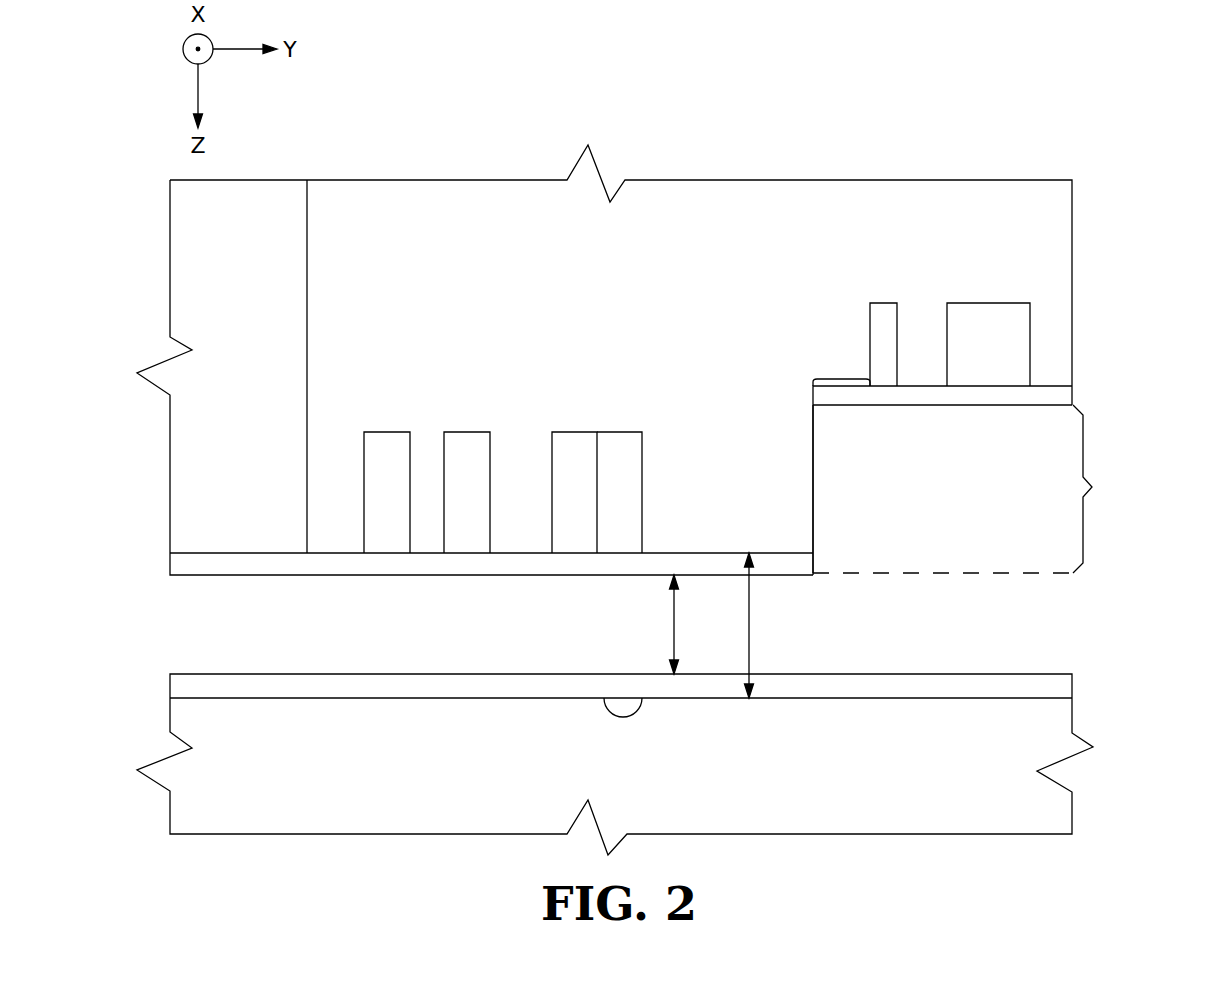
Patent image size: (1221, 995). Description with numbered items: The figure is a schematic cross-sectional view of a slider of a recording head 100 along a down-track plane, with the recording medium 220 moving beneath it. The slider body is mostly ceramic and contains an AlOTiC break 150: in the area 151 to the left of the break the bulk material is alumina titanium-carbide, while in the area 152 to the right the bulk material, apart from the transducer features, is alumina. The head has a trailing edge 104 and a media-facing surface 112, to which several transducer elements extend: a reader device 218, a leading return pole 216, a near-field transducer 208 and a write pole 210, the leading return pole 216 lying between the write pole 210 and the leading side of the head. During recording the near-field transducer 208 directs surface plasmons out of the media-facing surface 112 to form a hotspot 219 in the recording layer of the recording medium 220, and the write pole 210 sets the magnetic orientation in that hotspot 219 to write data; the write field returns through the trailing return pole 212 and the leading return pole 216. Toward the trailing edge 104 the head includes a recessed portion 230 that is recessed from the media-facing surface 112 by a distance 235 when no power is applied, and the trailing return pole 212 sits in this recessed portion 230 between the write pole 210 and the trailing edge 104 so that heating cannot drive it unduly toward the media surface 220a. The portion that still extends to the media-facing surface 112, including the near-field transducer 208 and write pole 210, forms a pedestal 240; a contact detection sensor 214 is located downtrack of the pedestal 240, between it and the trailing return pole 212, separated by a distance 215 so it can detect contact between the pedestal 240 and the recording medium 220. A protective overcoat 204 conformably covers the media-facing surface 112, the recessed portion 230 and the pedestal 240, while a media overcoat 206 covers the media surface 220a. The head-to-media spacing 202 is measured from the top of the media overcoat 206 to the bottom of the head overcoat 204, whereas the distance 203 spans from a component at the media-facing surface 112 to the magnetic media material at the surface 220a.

The recording head 100 is at (1114, 99).
The trailing edge 104 is at (640, 389).
The media-facing surface 112 is at (334, 567).
The AlOTiC break 150 is at (307, 337).
The area to the left of break 151 is at (221, 391).
The area to the right of break 152 is at (358, 257).
The head-to-media spacing 202 is at (674, 627).
The distance 203 is at (749, 627).
The protective overcoat 204 is at (390, 565).
The media overcoat 206 is at (1057, 686).
The near-field transducer 208 is at (573, 437).
The write pole 210 is at (620, 437).
The trailing return pole 212 is at (988, 303).
The contact detection sensor 214 is at (884, 303).
The distance 215 is at (843, 379).
The leading return pole 216 is at (467, 437).
The reader device 218 is at (389, 437).
The hotspot 219 is at (623, 718).
The recording medium 220 is at (615, 738).
The media surface 220a is at (203, 686).
The recessed portion 230 is at (1055, 527).
The distance 235 is at (1093, 487).
The pedestal 240 is at (837, 556).